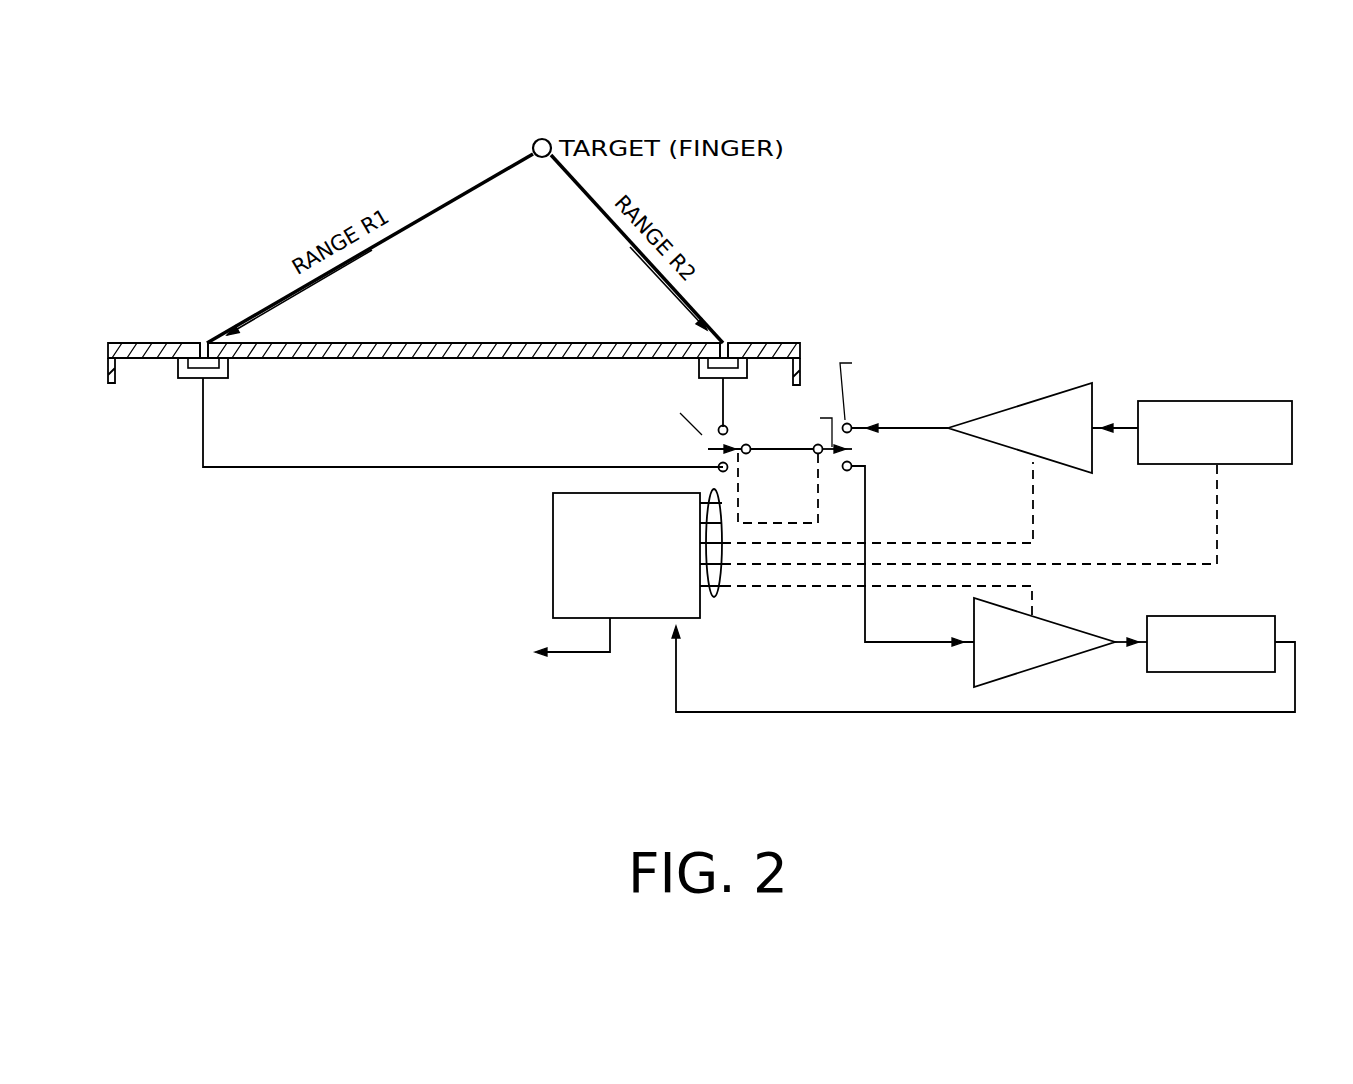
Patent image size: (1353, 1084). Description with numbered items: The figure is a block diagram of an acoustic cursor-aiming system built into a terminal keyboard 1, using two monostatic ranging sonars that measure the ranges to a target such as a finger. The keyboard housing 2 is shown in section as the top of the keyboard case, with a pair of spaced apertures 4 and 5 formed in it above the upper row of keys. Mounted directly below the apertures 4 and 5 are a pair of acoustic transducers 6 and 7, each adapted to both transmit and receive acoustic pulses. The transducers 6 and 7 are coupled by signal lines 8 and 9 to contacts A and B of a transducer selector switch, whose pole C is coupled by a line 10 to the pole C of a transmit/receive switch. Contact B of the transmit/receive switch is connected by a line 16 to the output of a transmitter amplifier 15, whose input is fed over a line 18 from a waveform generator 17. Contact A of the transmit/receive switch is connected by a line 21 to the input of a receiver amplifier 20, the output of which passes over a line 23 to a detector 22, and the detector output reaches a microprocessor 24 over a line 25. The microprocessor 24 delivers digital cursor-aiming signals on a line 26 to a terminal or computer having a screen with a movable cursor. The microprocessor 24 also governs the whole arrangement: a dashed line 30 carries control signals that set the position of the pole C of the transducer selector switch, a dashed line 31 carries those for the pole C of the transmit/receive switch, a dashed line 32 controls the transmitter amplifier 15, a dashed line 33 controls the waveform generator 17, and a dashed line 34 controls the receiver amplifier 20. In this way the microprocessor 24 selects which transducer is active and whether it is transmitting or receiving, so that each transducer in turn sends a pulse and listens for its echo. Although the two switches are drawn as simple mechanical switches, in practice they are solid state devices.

The terminal keyboard 1 is at (702, 280).
The housing 2 is at (278, 338).
The aperture 4 is at (205, 342).
The aperture 5 is at (723, 343).
The acoustic transducer 6 is at (212, 380).
The acoustic transducer 7 is at (699, 374).
The signal line 8 is at (332, 468).
The signal line 9 is at (727, 403).
The line 10 is at (775, 449).
The transmitter amplifier 15 is at (1058, 395).
The line 16 is at (907, 432).
The waveform generator 17 is at (1253, 400).
The line 18 is at (1130, 427).
The receiver amplifier 20 is at (1030, 672).
The line 21 is at (895, 645).
The detector 22 is at (1245, 615).
The line 23 is at (1123, 645).
The microprocessor 24 is at (553, 537).
The line 25 is at (843, 713).
The line 26 is at (587, 653).
The dashed line 30 is at (737, 483).
The dashed line 31 is at (763, 557).
The dashed line 32 is at (1033, 490).
The dashed line 33 is at (1217, 503).
The dashed line 34 is at (1032, 595).